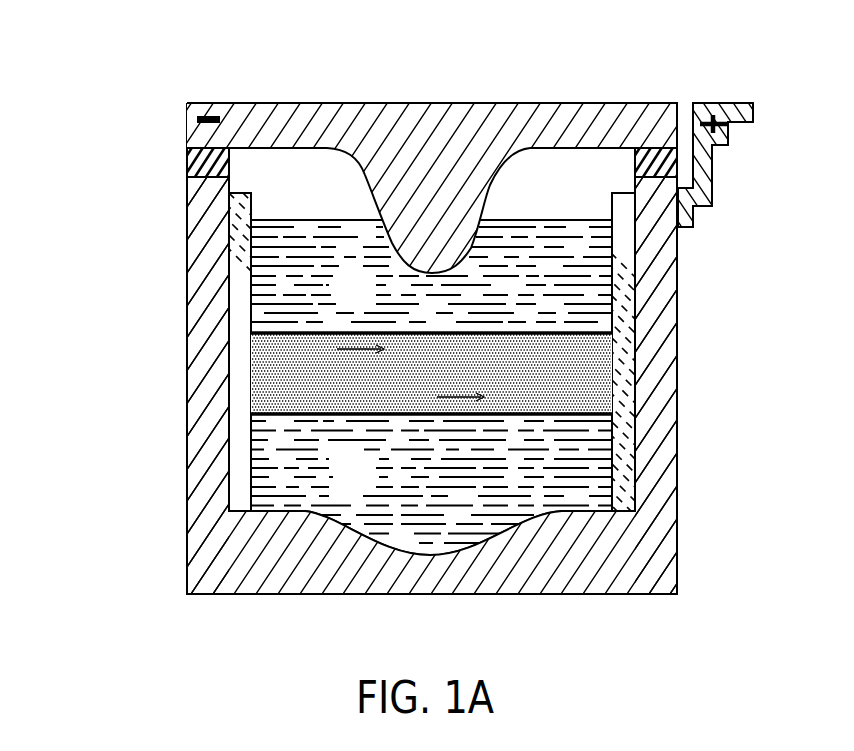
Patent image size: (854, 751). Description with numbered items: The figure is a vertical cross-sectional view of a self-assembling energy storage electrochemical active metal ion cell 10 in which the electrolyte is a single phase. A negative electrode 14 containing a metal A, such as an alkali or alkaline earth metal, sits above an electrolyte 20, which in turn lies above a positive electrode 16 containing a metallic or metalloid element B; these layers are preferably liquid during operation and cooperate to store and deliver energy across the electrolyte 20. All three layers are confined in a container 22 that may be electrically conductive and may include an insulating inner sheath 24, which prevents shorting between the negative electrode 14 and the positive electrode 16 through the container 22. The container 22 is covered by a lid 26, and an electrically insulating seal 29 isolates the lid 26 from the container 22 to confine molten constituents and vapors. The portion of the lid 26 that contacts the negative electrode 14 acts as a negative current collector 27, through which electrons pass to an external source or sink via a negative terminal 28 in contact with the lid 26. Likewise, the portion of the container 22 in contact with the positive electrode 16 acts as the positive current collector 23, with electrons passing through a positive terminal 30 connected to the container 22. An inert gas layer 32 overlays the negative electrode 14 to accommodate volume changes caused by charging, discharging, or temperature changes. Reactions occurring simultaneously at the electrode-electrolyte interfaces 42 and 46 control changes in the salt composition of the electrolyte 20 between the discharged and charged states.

The electrochemical cell 10 is at (137, 60).
The negative electrode 14 is at (262, 235).
The positive electrode 16 is at (263, 488).
The electrolyte 20 is at (446, 348).
The container 22 is at (427, 370).
The positive current collector 23 is at (457, 553).
The insulating inner sheath 24 is at (635, 497).
The lid 26 is at (442, 112).
The negative current collector 27 is at (447, 215).
The negative terminal 28 is at (187, 118).
The seal 29 is at (187, 157).
The positive terminal 30 is at (753, 112).
The inert gas layer 32 is at (535, 172).
The electrode-electrolyte interface 42 is at (580, 332).
The electrode-electrolyte interface 46 is at (587, 415).